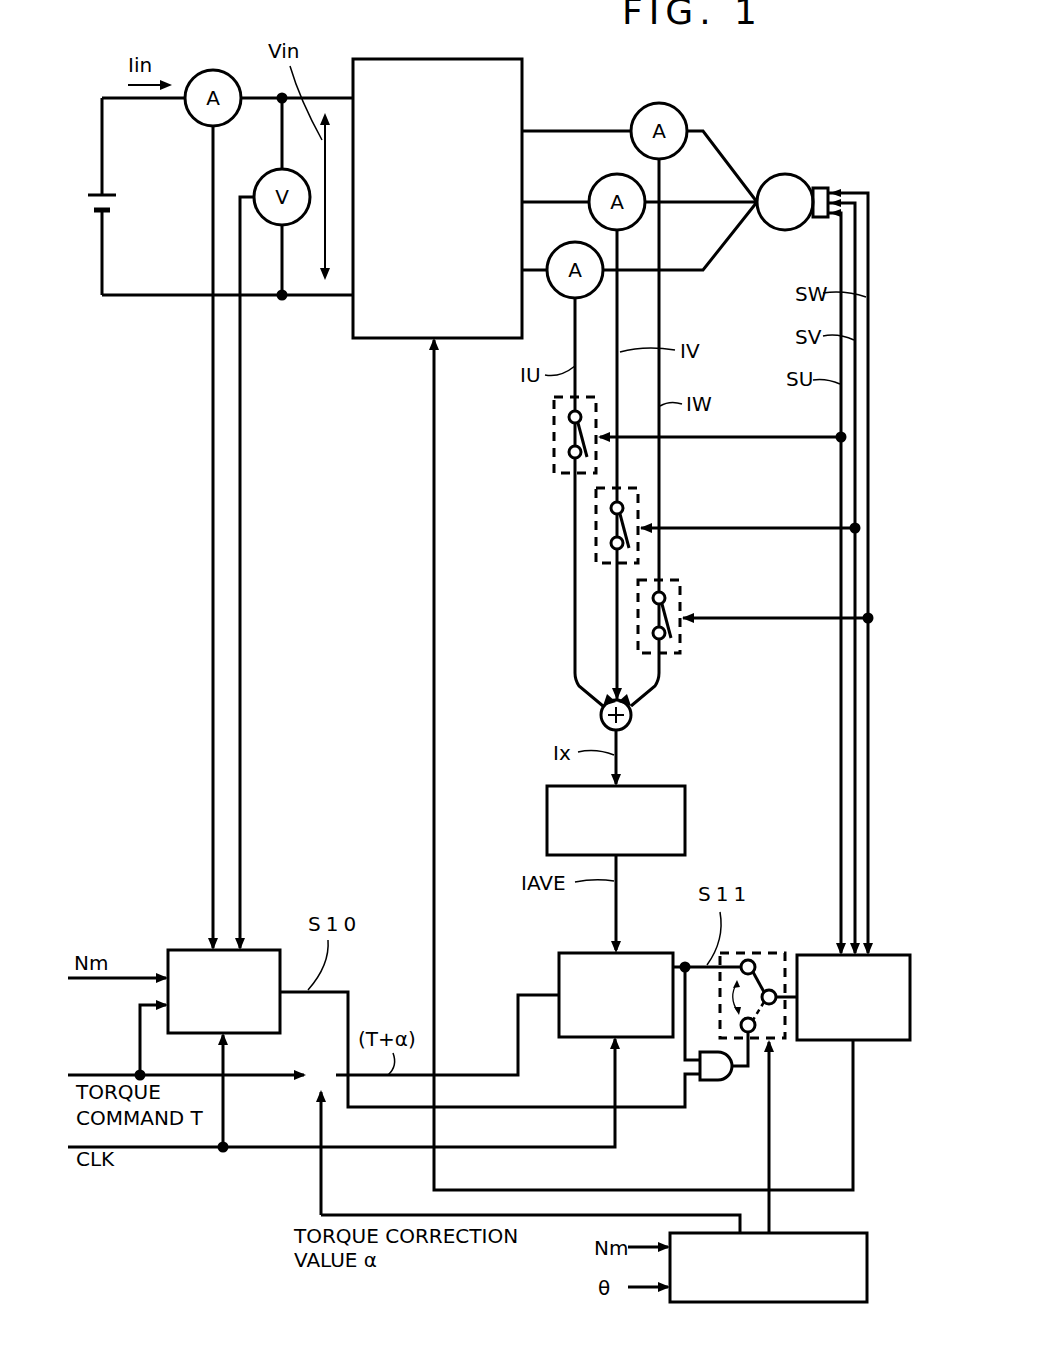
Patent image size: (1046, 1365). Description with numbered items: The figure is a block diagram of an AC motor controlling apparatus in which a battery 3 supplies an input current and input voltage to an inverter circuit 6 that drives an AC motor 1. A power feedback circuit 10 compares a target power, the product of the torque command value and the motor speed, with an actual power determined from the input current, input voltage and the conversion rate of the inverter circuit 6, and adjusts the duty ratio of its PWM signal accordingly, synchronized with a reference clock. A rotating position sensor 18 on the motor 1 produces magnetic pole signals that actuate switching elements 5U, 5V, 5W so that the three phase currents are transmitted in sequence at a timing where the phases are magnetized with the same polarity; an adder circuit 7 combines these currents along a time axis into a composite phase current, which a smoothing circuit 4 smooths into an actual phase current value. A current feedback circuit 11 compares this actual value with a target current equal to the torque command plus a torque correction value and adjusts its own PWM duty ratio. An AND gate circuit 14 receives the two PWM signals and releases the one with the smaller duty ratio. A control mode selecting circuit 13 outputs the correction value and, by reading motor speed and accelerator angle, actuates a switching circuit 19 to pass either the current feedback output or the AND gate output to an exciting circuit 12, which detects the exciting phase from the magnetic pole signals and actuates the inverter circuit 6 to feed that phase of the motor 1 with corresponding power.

The AC motor 1 is at (788, 174).
The battery 3 is at (116, 200).
The smoothing circuit 4 is at (685, 818).
The switching element 5U is at (554, 448).
The switching element 5V is at (596, 540).
The switching element 5W is at (680, 641).
The inverter circuit 6 is at (522, 88).
The adder circuit 7 is at (630, 722).
The power feedback circuit 10 is at (186, 949).
The current feedback circuit 11 is at (573, 953).
The exciting circuit 12 is at (872, 1042).
The control mode selecting circuit 13 is at (861, 1232).
The AND gate circuit 14 is at (710, 1082).
The rotating position sensor 18 is at (825, 186).
The switching circuit 19 is at (766, 982).